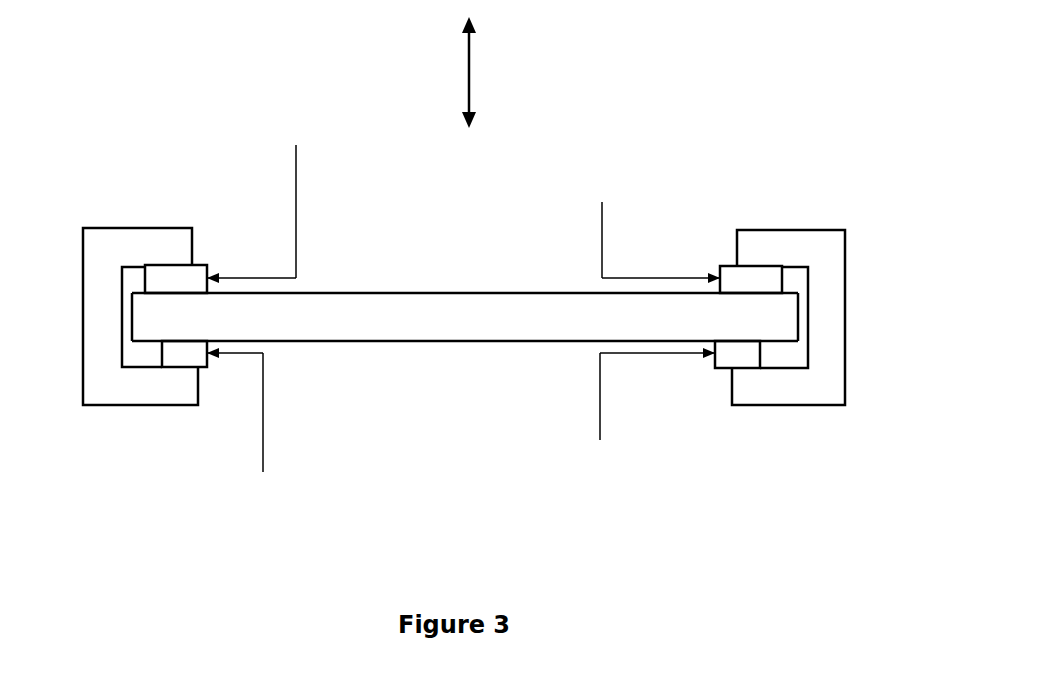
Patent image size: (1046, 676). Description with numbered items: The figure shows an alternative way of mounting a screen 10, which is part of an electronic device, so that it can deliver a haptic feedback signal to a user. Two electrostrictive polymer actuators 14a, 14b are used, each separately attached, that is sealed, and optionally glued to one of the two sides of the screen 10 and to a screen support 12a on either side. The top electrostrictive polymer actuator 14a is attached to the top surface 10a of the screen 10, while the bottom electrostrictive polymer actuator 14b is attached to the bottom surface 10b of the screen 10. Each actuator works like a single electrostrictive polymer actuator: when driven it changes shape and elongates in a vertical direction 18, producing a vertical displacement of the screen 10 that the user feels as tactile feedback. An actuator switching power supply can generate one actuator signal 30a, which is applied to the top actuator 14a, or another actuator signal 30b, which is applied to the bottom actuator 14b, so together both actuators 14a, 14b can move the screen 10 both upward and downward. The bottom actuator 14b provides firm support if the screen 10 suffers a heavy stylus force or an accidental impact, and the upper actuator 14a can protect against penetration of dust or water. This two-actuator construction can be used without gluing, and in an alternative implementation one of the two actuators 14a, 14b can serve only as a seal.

The screen 10 is at (395, 313).
The top surface of the screen 10a is at (500, 293).
The bottom surface of the screen 10b is at (348, 341).
The screen support 12a is at (140, 228).
The top electrostrictive polymer actuator 14a is at (175, 280).
The bottom electrostrictive polymer actuator 14b is at (183, 355).
The vertical direction 18 is at (469, 72).
The actuator signal applied to the top actuator 30a is at (295, 158).
The actuator signal applied to the bottom actuator 30b is at (263, 412).